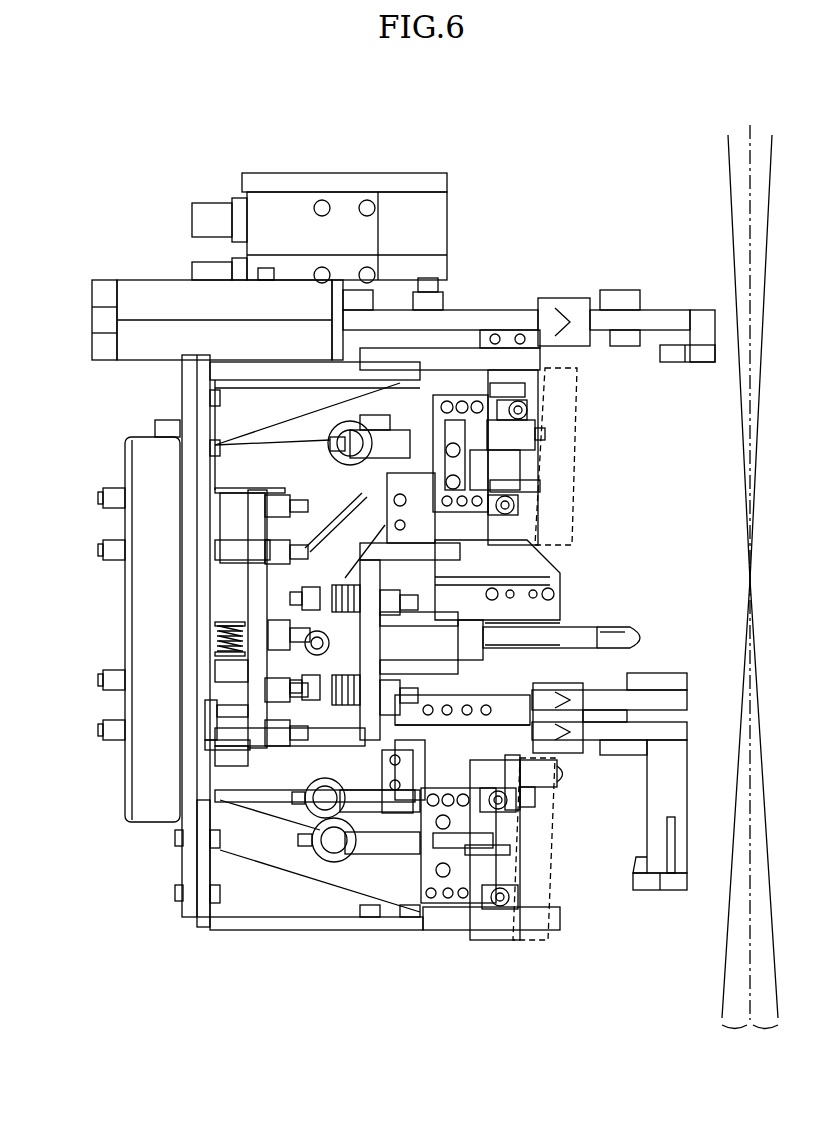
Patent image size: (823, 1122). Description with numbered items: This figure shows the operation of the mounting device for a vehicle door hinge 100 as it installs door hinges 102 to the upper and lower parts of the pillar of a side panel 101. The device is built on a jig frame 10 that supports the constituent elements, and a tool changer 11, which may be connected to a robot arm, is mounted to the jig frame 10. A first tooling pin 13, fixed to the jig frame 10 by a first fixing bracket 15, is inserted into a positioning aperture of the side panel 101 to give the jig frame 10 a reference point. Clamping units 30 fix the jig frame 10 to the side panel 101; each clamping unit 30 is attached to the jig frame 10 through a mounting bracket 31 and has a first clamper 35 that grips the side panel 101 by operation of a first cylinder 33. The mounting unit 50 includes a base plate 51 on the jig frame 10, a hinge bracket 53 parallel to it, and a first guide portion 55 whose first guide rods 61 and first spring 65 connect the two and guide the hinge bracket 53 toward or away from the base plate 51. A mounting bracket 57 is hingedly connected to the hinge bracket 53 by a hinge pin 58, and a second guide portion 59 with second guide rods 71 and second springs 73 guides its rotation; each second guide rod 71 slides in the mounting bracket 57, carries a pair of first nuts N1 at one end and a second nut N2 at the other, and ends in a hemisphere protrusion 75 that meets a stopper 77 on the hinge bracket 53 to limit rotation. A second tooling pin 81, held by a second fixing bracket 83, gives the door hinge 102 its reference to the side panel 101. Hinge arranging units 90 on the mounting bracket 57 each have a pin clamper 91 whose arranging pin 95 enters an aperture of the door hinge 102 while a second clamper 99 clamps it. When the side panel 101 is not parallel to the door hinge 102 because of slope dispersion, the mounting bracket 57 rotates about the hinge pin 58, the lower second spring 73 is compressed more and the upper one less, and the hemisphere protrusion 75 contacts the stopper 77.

The mounting device for a vehicle door hinge 100 is at (362, 109).
The jig frame 10 is at (118, 613).
The tool changer 11 is at (402, 180).
The first tooling pin 13 is at (635, 630).
The first fixing bracket 15 is at (530, 557).
The clamping unit 30 is at (160, 270).
The mounting bracket 31 is at (437, 320).
The first cylinder 33 is at (137, 350).
The first clamper 35 is at (703, 358).
The mounting unit 50 is at (600, 450).
The base plate 51 is at (203, 715).
The hinge bracket 53 is at (253, 670).
The first guide portion 55 is at (232, 612).
The mounting bracket 57 is at (612, 622).
The hinge pin 58 is at (460, 640).
The second guide portion 59 is at (285, 680).
The first guide rod 61 is at (237, 738).
The first spring 65 is at (225, 650).
The second guide rod 71 is at (555, 584).
The second spring 73 is at (300, 525).
The hemisphere protrusion 75 is at (268, 550).
The stopper 77 is at (273, 690).
The second tooling pin 81 is at (563, 786).
The second fixing bracket 83 is at (558, 780).
The hinge arranging unit 90 is at (474, 385).
The pin clamper 91 is at (506, 445).
The arranging pin 95 is at (527, 412).
The second clamper 99 is at (500, 394).
The side panel 101 is at (725, 985).
The door hinge 102 is at (578, 402).
The first nut N1 is at (470, 672).
The second nut N2 is at (272, 532).